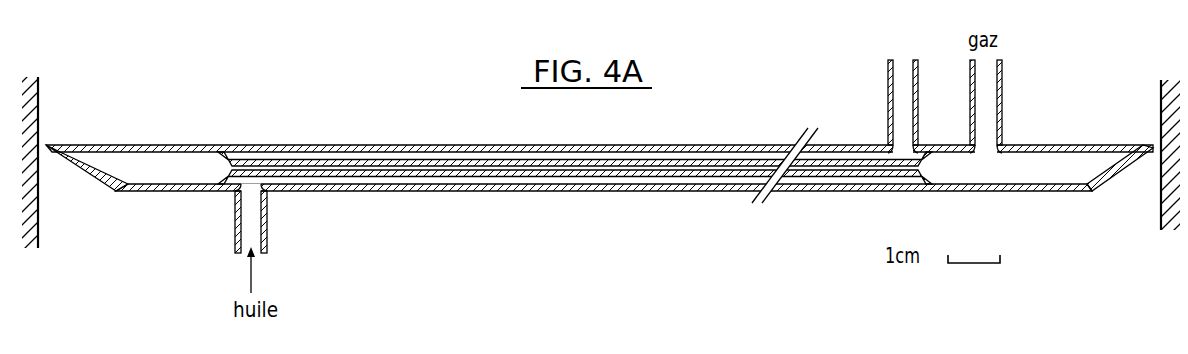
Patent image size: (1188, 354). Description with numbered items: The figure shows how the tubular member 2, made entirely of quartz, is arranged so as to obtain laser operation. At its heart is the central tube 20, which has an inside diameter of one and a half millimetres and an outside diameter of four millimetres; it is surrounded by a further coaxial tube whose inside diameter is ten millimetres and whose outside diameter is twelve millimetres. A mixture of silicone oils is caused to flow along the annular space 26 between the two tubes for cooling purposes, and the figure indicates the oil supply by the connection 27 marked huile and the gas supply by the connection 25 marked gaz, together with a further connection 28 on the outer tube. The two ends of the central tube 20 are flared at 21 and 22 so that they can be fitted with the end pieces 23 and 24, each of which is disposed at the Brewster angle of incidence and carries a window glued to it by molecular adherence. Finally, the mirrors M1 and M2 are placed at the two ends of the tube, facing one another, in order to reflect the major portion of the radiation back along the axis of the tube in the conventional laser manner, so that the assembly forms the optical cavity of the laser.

The tubular member 2 is at (268, 141).
The tube 20 is at (414, 160).
The flared end 21 is at (140, 158).
The flared end 22 is at (1084, 166).
The end piece 23 is at (88, 178).
The end piece 24 is at (1124, 172).
The gas inlet tube 25 is at (990, 80).
The annular gap between tubes 26 is at (689, 157).
The oil inlet tube 27 is at (267, 229).
The outlet tube 28 is at (900, 72).
The mirror M1 is at (38, 88).
The mirror M2 is at (1160, 102).